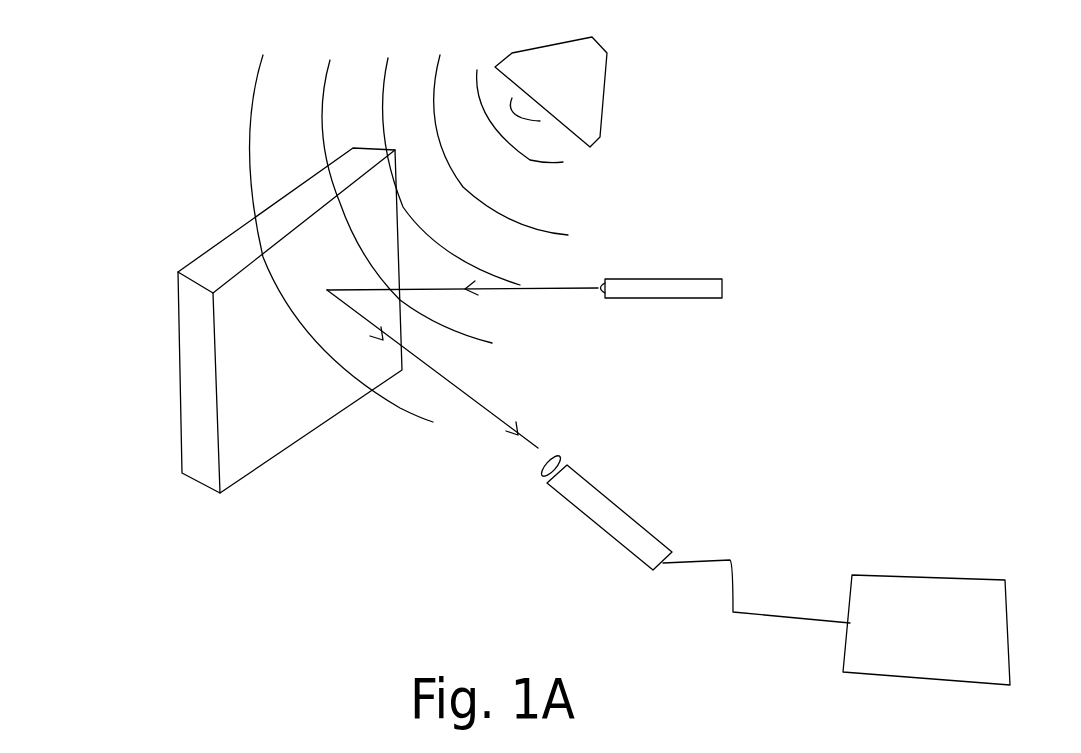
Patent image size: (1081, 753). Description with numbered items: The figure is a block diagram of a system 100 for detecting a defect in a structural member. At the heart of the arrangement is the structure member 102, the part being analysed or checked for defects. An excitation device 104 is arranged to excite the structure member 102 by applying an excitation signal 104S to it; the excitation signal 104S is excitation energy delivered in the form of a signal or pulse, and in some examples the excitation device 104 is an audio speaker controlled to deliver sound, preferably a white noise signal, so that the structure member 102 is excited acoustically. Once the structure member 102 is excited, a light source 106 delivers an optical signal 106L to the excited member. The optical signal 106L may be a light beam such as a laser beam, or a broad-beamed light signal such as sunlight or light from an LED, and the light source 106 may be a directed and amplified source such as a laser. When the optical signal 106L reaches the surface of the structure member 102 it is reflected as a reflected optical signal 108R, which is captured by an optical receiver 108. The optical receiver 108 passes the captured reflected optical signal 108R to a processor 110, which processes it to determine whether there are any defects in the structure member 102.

The system for detecting a defect in a structural member 100 is at (850, 145).
The structure member 102 is at (200, 412).
The excitation device 104 is at (608, 70).
The excitation signal 104S is at (513, 198).
The light source 106 is at (728, 283).
The optical signal 106L is at (552, 292).
The reflected optical signal 108R is at (488, 407).
The optical receiver 108 is at (637, 510).
The processor 110 is at (928, 568).